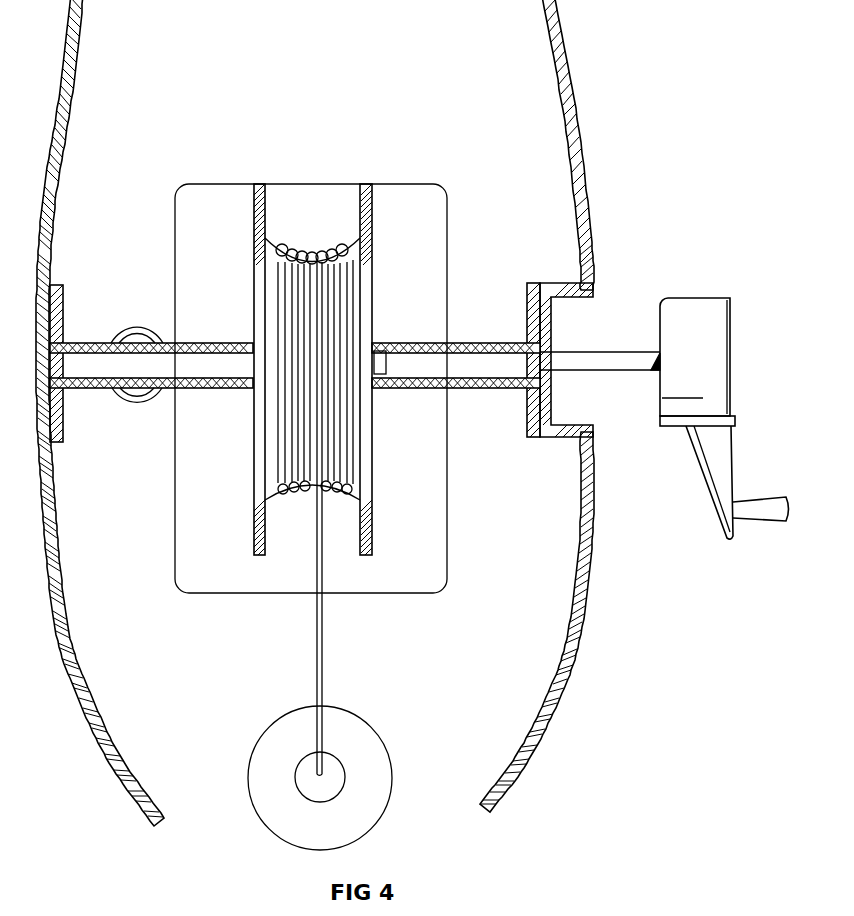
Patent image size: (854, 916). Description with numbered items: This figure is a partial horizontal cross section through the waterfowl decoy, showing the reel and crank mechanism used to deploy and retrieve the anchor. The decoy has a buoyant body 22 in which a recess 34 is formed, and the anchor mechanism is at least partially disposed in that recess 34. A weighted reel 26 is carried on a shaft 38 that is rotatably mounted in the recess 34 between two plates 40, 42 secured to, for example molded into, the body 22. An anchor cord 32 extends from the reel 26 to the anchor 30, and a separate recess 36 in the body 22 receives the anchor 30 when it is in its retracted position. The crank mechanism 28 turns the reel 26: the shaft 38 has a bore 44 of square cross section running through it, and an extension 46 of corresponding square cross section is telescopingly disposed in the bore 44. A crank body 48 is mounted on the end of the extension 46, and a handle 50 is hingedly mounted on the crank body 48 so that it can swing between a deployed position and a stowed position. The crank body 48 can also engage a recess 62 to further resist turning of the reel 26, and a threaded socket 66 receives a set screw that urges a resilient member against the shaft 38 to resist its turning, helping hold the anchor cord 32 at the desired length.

The buoyant body 22 is at (517, 773).
The weighted reel 26 is at (263, 267).
The crank mechanism 28 is at (690, 472).
The anchor 30 is at (322, 793).
The anchor cord 32 is at (320, 722).
The recess 34 is at (407, 563).
The recess 36 is at (374, 812).
The shaft 38 is at (503, 343).
The plate 40 is at (66, 305).
The plate 42 is at (533, 293).
The bore 44 is at (119, 333).
The extension 46 is at (612, 360).
The crank body 48 is at (695, 325).
The handle 50 is at (710, 452).
The recess 62 is at (577, 403).
The threaded socket 66 is at (136, 399).